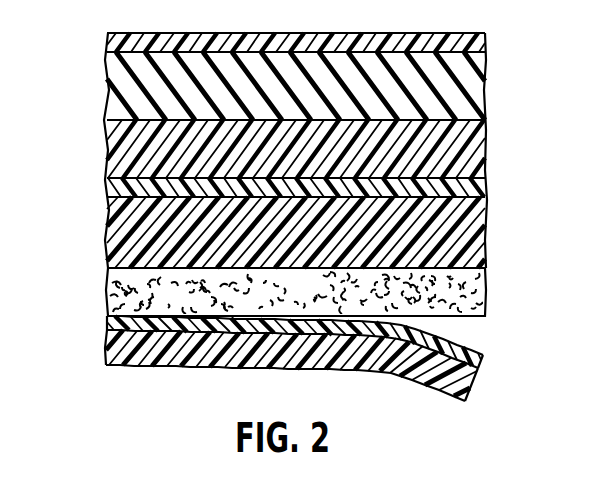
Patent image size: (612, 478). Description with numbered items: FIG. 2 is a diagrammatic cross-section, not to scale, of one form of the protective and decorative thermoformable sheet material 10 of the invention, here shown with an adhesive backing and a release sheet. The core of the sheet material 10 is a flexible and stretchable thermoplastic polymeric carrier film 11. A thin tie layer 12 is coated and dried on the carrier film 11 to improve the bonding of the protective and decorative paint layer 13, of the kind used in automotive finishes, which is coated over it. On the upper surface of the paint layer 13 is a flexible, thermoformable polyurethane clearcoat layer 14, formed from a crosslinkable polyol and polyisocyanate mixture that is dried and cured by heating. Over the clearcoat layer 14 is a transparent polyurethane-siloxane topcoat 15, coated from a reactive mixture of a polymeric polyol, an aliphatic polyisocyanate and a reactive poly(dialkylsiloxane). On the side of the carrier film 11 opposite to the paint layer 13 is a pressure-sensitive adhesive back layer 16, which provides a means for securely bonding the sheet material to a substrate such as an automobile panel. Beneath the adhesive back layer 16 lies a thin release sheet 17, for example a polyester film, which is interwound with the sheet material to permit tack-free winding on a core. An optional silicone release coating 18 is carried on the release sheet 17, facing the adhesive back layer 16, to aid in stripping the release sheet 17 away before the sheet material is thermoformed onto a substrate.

The thermoformable sheet material 10 is at (90, 268).
The carrier film 11 is at (488, 245).
The tie layer 12 is at (487, 200).
The paint layer 13 is at (485, 155).
The clearcoat layer 14 is at (487, 83).
The polyurethane-siloxane topcoat 15 is at (489, 46).
The pressure-sensitive adhesive back layer 16 is at (488, 293).
The release sheet 17 is at (480, 382).
The silicone release coating 18 is at (485, 355).